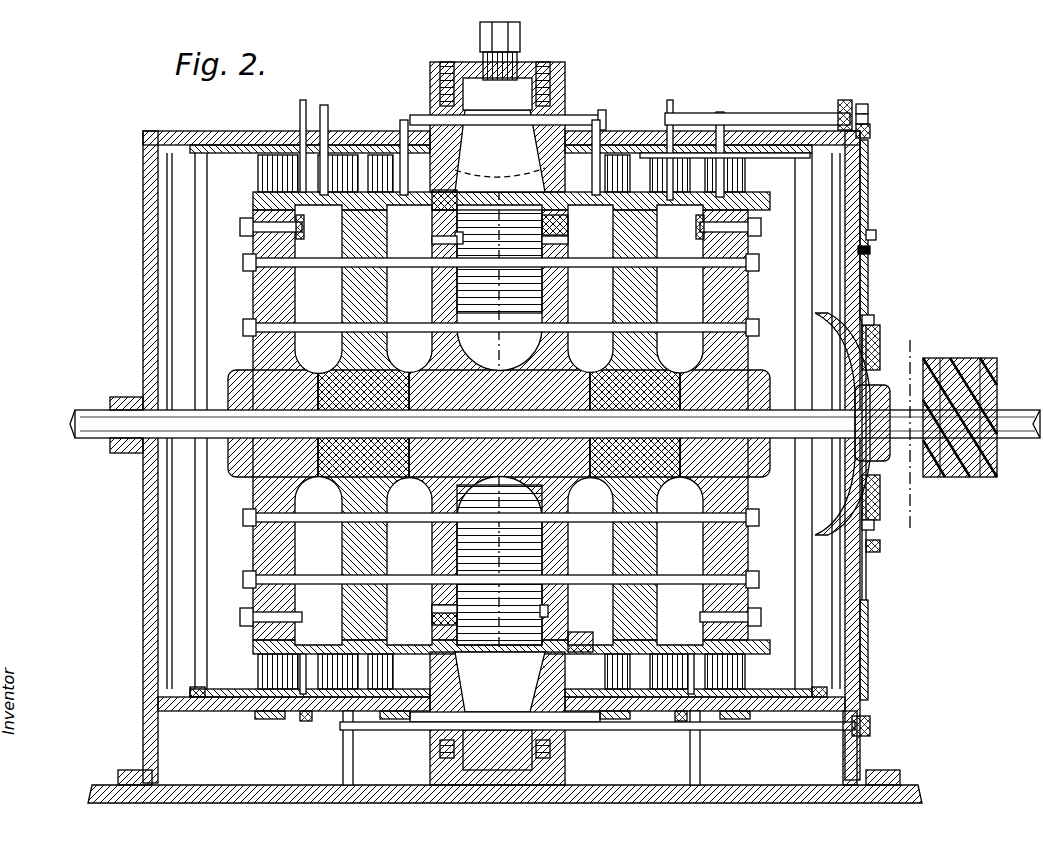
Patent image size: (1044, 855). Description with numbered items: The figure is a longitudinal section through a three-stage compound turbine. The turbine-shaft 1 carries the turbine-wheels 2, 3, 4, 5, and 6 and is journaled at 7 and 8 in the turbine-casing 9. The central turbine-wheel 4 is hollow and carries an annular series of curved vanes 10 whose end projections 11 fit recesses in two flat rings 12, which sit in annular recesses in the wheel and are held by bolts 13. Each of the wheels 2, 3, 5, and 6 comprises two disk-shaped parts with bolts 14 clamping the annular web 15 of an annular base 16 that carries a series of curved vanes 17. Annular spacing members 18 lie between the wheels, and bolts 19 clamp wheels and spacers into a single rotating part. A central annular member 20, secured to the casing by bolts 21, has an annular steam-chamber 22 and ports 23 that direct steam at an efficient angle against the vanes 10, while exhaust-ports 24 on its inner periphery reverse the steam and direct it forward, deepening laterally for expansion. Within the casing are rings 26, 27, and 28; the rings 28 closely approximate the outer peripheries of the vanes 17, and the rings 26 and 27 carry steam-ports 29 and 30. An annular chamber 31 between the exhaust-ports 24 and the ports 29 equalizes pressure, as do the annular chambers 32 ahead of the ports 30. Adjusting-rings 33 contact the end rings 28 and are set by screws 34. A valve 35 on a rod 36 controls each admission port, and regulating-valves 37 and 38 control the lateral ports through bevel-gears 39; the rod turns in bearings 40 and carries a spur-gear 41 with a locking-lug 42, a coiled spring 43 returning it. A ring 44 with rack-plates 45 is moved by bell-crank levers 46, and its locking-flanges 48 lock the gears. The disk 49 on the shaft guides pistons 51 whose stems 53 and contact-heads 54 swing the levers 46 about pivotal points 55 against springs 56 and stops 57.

The turbine-shaft 1 is at (98, 412).
The turbine-wheel 2 is at (258, 348).
The turbine-wheel 3 is at (346, 346).
The central turbine-wheel 4 is at (440, 346).
The turbine-wheel 5 is at (626, 344).
The turbine-wheel 6 is at (710, 343).
The journal 7 is at (122, 448).
The journal 8 is at (836, 443).
The turbine-casing 9 is at (150, 262).
The curved vanes 10 is at (473, 192).
The end projections 11 is at (560, 226).
The flat rings 12 is at (462, 240).
The bolts 13 is at (432, 242).
The bolts 14 is at (254, 232).
The annular web 15 is at (250, 218).
The annular base 16 is at (257, 198).
The curved vanes 17 is at (270, 165).
The annular spacing members 18 is at (318, 222).
The bolts 19 is at (311, 325).
The central annular member 20 is at (464, 140).
The bolts 21 is at (560, 88).
The annular steam-chamber 22 is at (478, 72).
The ports 23 is at (512, 150).
The exhaust-ports 24 is at (508, 180).
The rings 26 is at (410, 730).
The rings 27 is at (306, 720).
The rings 28 is at (270, 720).
The steam-ports 29 is at (620, 165).
The steam-ports 30 is at (307, 165).
The annular chamber 31 is at (430, 180).
The annular chambers 32 is at (337, 176).
The adjusting-rings 33 is at (226, 706).
The screws 34 is at (196, 688).
The valve 35 is at (604, 114).
The rod 36 is at (700, 132).
The regulating-valves 37 is at (403, 150).
The regulating-valves 38 is at (324, 150).
The bevel-gears 39 is at (670, 112).
The bearings 40 is at (700, 112).
The spur-gear 41 is at (866, 106).
The locking-lug 42 is at (870, 118).
The coiled spring 43 is at (845, 98).
The ring 44 is at (871, 133).
The rack-plates 45 is at (869, 162).
The bell-crank levers 46 is at (869, 216).
The locking-flanges 48 is at (871, 712).
The disk 49 is at (882, 346).
The blocks or pistons 51 is at (906, 364).
The stem 53 is at (882, 340).
The contact-head 54 is at (875, 320).
The pivotal points 55 is at (881, 547).
The springs 56 is at (877, 236).
The stops 57 is at (871, 255).